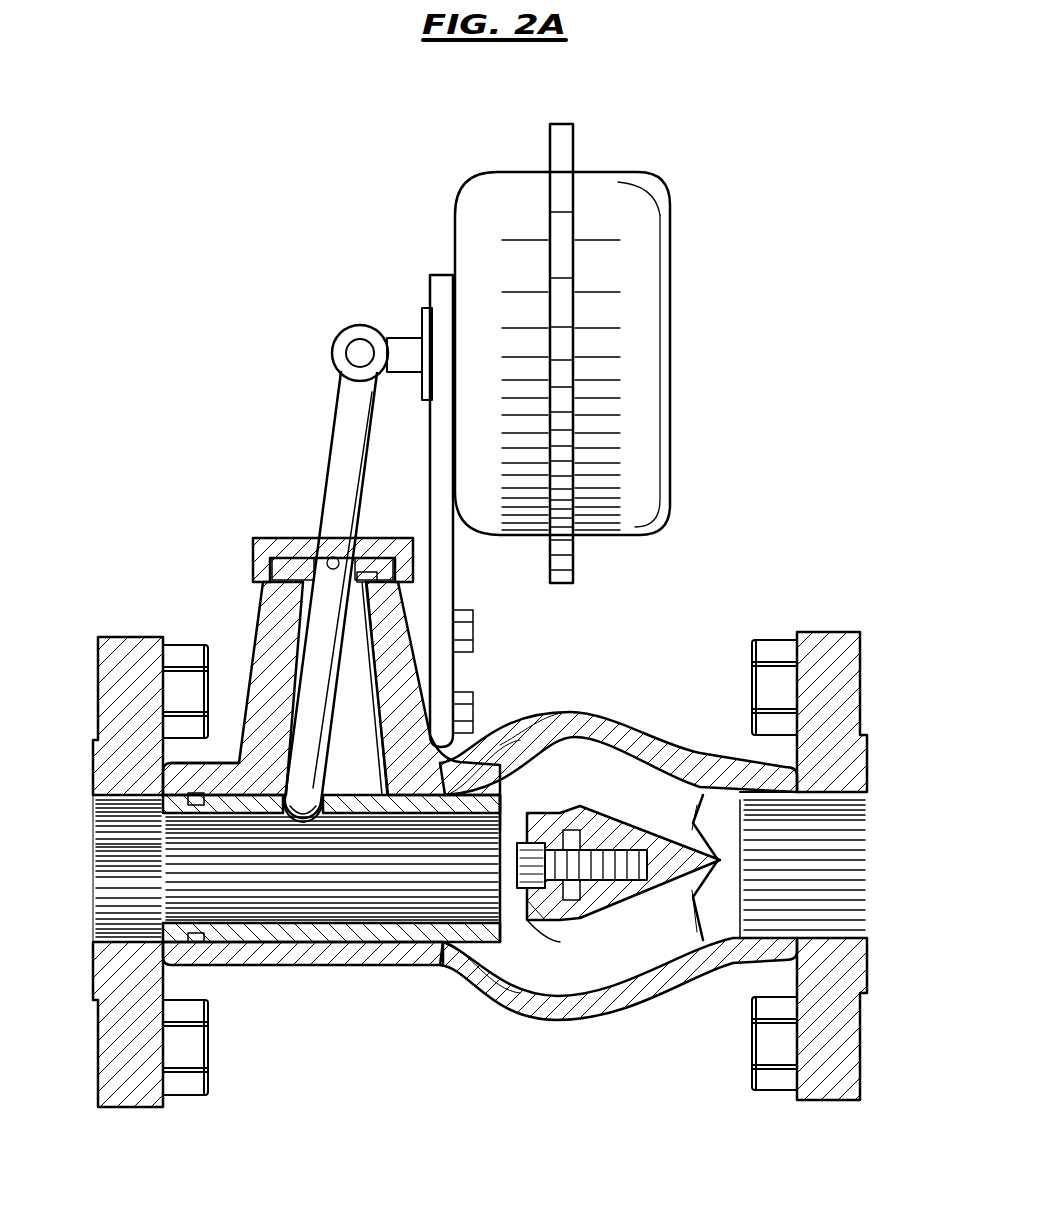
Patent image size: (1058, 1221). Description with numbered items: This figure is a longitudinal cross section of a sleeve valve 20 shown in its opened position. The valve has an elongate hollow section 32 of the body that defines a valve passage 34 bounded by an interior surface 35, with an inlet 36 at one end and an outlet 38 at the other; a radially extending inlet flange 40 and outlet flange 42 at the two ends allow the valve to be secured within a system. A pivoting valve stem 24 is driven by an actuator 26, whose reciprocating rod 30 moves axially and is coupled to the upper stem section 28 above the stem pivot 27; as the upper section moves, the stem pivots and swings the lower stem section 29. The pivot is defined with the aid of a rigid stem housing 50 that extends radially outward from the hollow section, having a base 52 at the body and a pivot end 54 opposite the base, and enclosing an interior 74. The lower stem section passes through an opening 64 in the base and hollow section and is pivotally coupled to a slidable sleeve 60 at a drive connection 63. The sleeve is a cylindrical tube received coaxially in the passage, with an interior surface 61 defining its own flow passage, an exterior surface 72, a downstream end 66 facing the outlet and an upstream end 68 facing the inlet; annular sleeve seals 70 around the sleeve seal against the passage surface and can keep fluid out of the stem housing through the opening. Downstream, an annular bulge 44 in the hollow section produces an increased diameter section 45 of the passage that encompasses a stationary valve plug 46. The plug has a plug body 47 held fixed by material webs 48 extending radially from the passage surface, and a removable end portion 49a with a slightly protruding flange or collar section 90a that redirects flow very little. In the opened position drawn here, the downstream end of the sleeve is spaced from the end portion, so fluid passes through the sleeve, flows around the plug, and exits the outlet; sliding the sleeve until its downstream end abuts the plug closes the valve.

The sleeve valve 20 is at (206, 192).
The valve stem 24 is at (318, 468).
The actuator 26 is at (625, 212).
The stem pivot 27 is at (305, 532).
The upper stem section 28 is at (322, 393).
The lower stem section 29 is at (308, 722).
The reciprocating rod 30 is at (400, 338).
The elongate hollow section 32 is at (365, 970).
The valve passage 34 is at (133, 903).
The interior surface 35 is at (160, 800).
The inlet 36 is at (100, 945).
The outlet 38 is at (870, 893).
The inlet flange 40 is at (128, 652).
The outlet flange 42 is at (838, 672).
The annular bulge 44 is at (568, 708).
The increased diameter section 45 is at (530, 747).
The valve plug 46 is at (586, 803).
The plug body 47 is at (628, 905).
The material webs 48 is at (646, 813).
The end portion 49a is at (540, 912).
The stem housing 50 is at (268, 634).
The base 52 is at (250, 770).
The pivot end 54 is at (284, 592).
The sleeve 60 is at (328, 928).
The interior surface 61 is at (262, 820).
The drive connection 63 is at (313, 830).
The opening 64 is at (378, 805).
The downstream end 66 is at (505, 825).
The upstream end 68 is at (160, 850).
The sleeve seals 70 is at (195, 800).
The exterior surface 72 is at (497, 760).
The interior 74 is at (356, 674).
The flange or collar section 90a is at (590, 900).